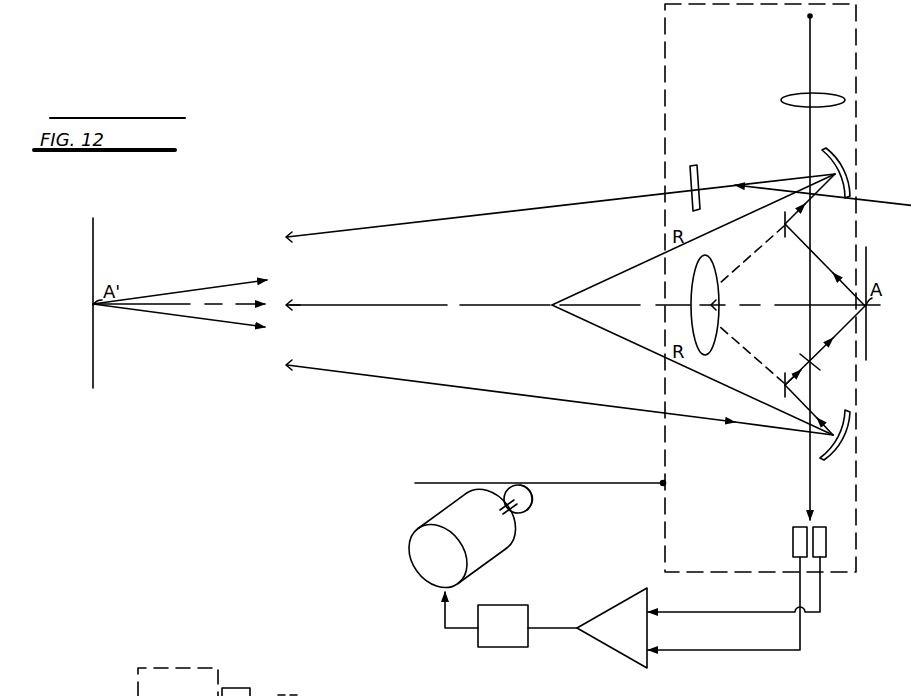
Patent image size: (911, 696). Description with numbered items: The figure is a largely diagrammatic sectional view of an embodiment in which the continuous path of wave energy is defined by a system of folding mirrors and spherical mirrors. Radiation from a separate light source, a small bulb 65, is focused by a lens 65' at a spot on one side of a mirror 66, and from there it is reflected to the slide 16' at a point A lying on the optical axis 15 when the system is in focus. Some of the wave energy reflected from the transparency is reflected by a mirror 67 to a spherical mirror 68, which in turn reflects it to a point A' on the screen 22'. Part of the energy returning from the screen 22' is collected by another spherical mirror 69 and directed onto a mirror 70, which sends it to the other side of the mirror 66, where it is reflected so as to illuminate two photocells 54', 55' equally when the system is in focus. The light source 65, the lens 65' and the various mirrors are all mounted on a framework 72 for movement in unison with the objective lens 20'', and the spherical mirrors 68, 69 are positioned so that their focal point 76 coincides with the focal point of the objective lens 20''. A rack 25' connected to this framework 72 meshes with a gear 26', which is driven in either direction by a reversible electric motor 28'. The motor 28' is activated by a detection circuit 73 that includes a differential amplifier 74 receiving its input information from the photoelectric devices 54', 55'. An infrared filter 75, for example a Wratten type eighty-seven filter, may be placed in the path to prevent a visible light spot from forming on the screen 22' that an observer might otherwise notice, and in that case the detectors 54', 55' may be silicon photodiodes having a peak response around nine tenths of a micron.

The small bulb 65 is at (790, 25).
The lens 65' is at (790, 95).
The spherical mirror 68 is at (846, 140).
The infrared filter 75 is at (697, 188).
The mirror 67 is at (783, 226).
The slide 16' is at (872, 287).
The objective lens 20'' is at (718, 298).
The mirror 66 is at (812, 366).
The mirror 70 is at (783, 386).
The spherical mirror 69 is at (832, 462).
The photocell 54' is at (775, 542).
The photocell 55' is at (832, 530).
The framework 72 is at (665, 562).
The screen 22' is at (112, 303).
The optical axis 15 is at (172, 306).
The focal point 76 is at (552, 305).
The rack 25' is at (540, 472).
The reversible electric motor 28' is at (460, 538).
The gear 26' is at (535, 507).
The detection circuit 73 is at (503, 647).
The differential amplifier 74 is at (628, 646).